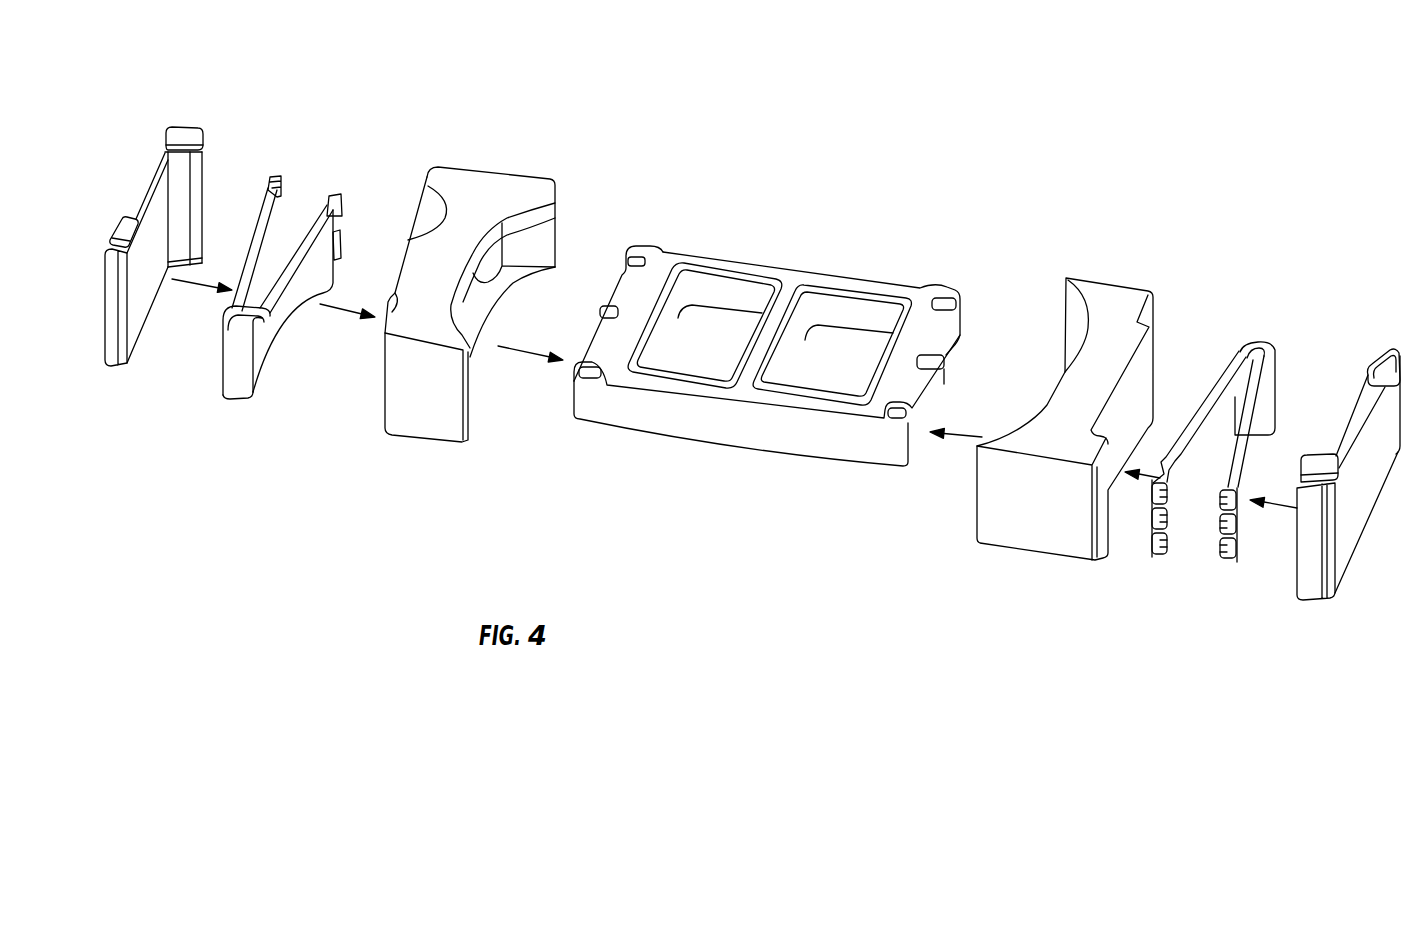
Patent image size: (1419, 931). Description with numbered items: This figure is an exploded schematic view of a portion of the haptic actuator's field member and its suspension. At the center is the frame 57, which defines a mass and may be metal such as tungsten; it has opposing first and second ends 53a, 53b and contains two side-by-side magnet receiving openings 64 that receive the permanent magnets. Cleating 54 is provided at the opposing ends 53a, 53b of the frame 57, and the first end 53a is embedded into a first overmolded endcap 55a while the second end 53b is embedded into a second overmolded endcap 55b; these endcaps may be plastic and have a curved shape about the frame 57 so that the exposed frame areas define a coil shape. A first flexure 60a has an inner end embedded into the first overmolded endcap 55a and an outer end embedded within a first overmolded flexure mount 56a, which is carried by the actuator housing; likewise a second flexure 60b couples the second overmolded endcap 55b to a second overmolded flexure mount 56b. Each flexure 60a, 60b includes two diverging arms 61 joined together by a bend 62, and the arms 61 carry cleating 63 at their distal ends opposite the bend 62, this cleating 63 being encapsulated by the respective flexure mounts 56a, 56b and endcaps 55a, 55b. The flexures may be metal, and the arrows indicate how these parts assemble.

The first end of the frame 53a is at (588, 410).
The second end of the frame 53b is at (886, 457).
The cleating 54 is at (641, 250).
The first overmolded endcap 55a is at (485, 187).
The second overmolded endcap 55b is at (1057, 540).
The first overmolded flexure mount 56a is at (182, 128).
The second overmolded flexure mount 56b is at (1313, 583).
The frame 57 is at (716, 425).
The first flexure 60a is at (245, 421).
The second flexure 60b is at (1239, 322).
The diverging arms 61 is at (268, 198).
The bend 62 is at (222, 390).
The cleating 63 is at (346, 214).
The magnet receiving openings 64 is at (840, 343).